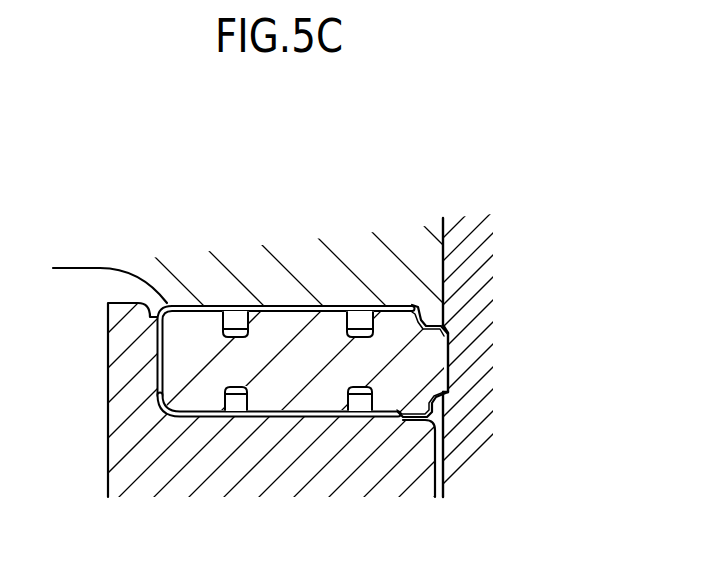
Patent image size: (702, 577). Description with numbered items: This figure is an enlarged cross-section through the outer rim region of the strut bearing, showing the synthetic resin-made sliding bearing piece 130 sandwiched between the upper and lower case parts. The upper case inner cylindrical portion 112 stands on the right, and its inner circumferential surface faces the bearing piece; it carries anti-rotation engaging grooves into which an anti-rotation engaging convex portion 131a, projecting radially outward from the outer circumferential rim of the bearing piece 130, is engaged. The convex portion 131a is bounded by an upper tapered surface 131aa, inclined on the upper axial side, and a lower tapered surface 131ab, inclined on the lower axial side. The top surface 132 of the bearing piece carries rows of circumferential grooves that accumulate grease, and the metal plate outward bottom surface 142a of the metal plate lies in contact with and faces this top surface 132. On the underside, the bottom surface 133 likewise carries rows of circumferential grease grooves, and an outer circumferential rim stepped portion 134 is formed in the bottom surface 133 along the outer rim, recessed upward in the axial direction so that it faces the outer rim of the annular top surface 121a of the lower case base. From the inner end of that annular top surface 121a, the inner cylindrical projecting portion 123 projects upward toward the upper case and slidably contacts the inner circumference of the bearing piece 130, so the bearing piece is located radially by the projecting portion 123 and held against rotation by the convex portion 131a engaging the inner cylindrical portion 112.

The upper case inner cylindrical portion 112 is at (470, 378).
The annular top surface 121a is at (295, 420).
The inner cylindrical projecting portion 123 is at (123, 374).
The synthetic resin-made sliding bearing piece 130 is at (195, 343).
The anti-rotation engaging convex portion 131a is at (450, 352).
The upper tapered surface 131aa is at (480, 293).
The lower tapered surface 131ab is at (450, 390).
The top surface 132 is at (322, 310).
The bottom surface 133 is at (327, 412).
The outer circumferential rim stepped portion 134 is at (432, 402).
The metal plate outward bottom surface 142a is at (379, 306).